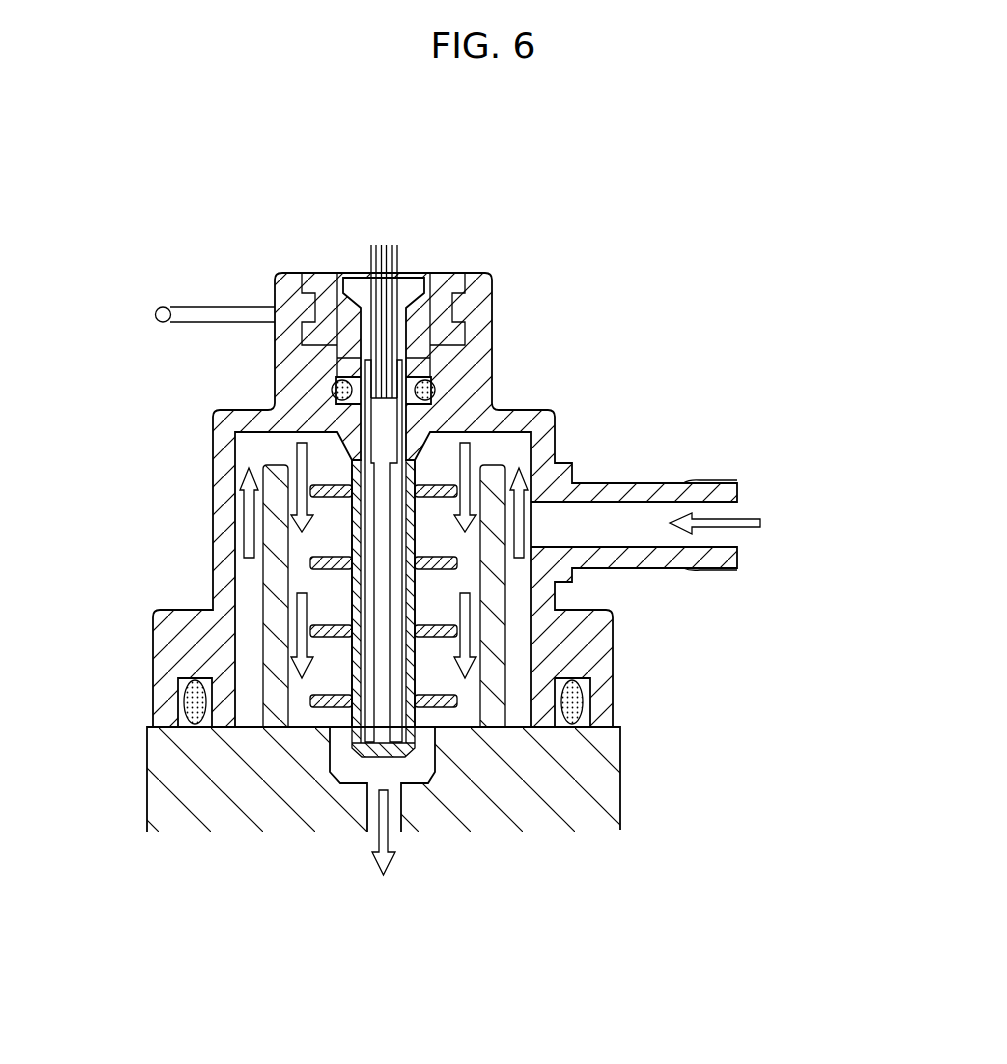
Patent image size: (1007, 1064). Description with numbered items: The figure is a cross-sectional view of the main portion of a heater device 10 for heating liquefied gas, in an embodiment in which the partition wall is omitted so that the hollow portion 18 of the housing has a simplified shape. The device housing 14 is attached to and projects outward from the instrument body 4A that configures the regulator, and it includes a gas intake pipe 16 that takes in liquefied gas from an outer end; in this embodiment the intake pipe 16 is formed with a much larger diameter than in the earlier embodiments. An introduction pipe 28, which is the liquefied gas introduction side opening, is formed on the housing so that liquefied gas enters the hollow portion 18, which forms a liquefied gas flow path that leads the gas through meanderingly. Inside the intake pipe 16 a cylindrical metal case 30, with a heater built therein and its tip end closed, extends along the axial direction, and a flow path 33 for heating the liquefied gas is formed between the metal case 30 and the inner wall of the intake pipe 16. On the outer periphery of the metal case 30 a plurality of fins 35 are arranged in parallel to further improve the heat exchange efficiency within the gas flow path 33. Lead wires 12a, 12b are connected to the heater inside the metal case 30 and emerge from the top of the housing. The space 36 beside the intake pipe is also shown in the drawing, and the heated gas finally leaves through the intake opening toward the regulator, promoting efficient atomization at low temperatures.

The heater device 10 is at (551, 248).
The lead wire 12a is at (371, 258).
The lead wire 12b is at (397, 258).
The device housing 14 is at (607, 697).
The gas intake pipe 16 is at (253, 464).
The hollow portion 18 is at (520, 652).
The introduction pipe 28 is at (659, 483).
The metal case 30 is at (407, 752).
The flow path 33 is at (313, 538).
The fin 35 is at (455, 488).
The passage 36 is at (250, 600).
The instrument body 4A is at (603, 780).